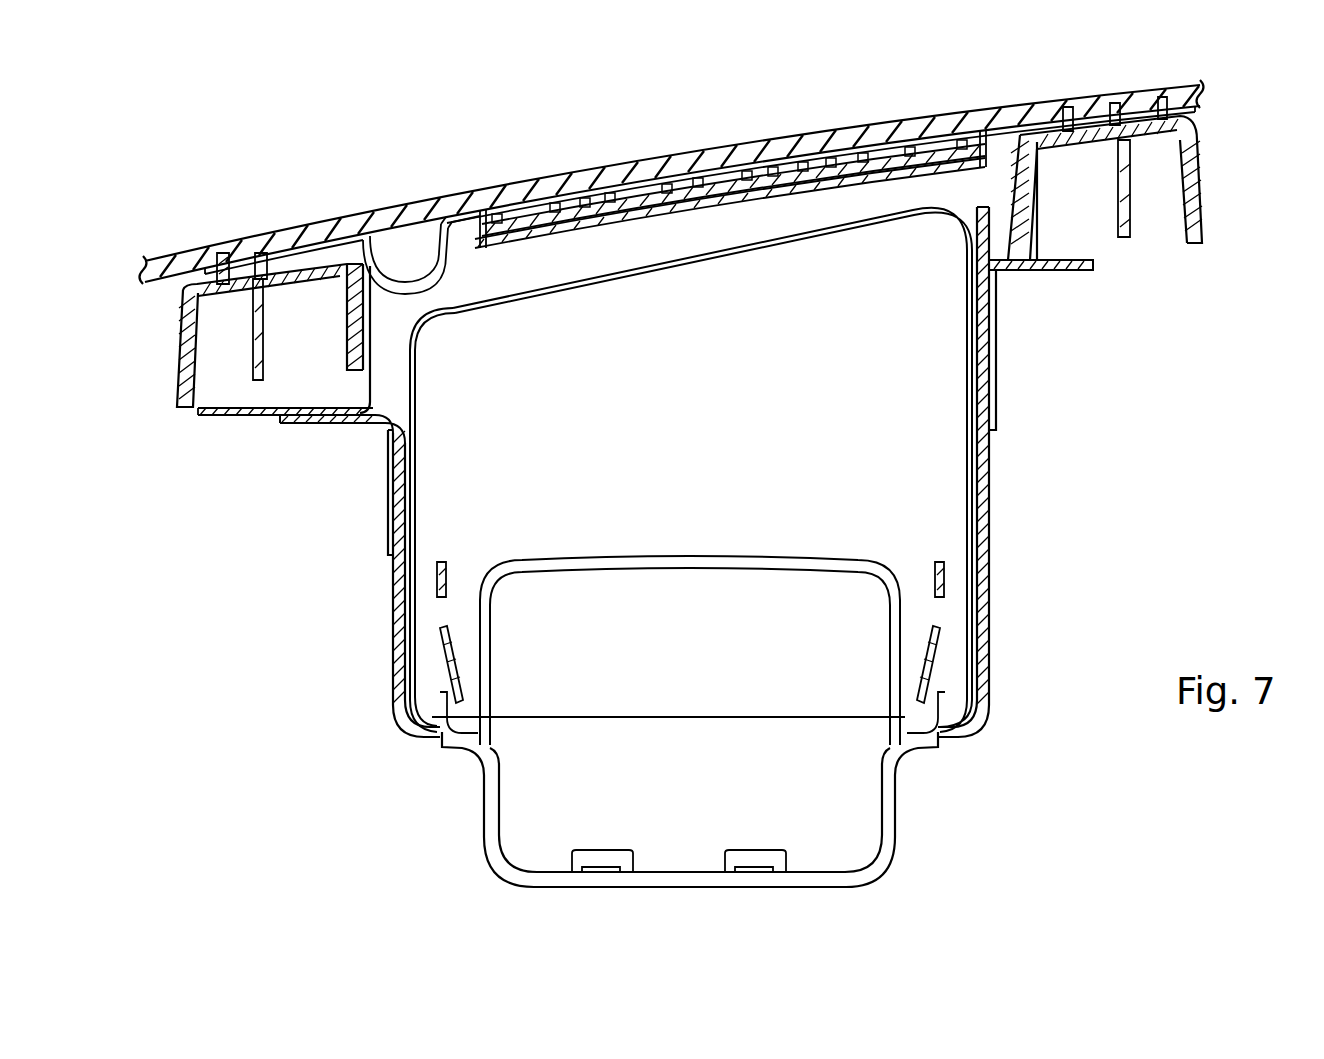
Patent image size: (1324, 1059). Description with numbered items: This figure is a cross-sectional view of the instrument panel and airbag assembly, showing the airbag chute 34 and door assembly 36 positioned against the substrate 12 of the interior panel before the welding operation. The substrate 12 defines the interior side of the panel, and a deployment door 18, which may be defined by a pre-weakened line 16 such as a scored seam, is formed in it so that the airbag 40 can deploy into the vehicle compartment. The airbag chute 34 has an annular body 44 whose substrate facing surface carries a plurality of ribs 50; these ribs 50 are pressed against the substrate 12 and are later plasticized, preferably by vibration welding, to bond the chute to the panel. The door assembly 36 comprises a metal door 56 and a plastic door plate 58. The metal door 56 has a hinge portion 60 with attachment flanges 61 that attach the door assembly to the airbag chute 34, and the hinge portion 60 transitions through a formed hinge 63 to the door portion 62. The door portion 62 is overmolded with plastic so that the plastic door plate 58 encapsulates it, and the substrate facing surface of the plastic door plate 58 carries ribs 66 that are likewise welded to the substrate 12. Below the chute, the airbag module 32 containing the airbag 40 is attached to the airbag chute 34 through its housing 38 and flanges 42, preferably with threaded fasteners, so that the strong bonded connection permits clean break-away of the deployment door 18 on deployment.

The substrate 12 is at (187, 262).
The pre-weakened line 16 is at (360, 232).
The deployment door 18 is at (735, 148).
The airbag module 32 is at (995, 597).
The airbag chute 34 is at (1209, 158).
The door assembly 36 is at (441, 236).
The housing 38 is at (390, 550).
The airbag 40 is at (905, 351).
The flanges 42 is at (322, 424).
The annular body 44 is at (186, 349).
The ribs 50 is at (221, 253).
The metal door 56 is at (381, 240).
The plastic door plate 58 is at (587, 224).
The hinge portion 60 is at (438, 285).
The attachment flanges 61 is at (297, 424).
The door portion 62 is at (664, 208).
The hinge 63 is at (395, 272).
The ribs 66 is at (497, 208).